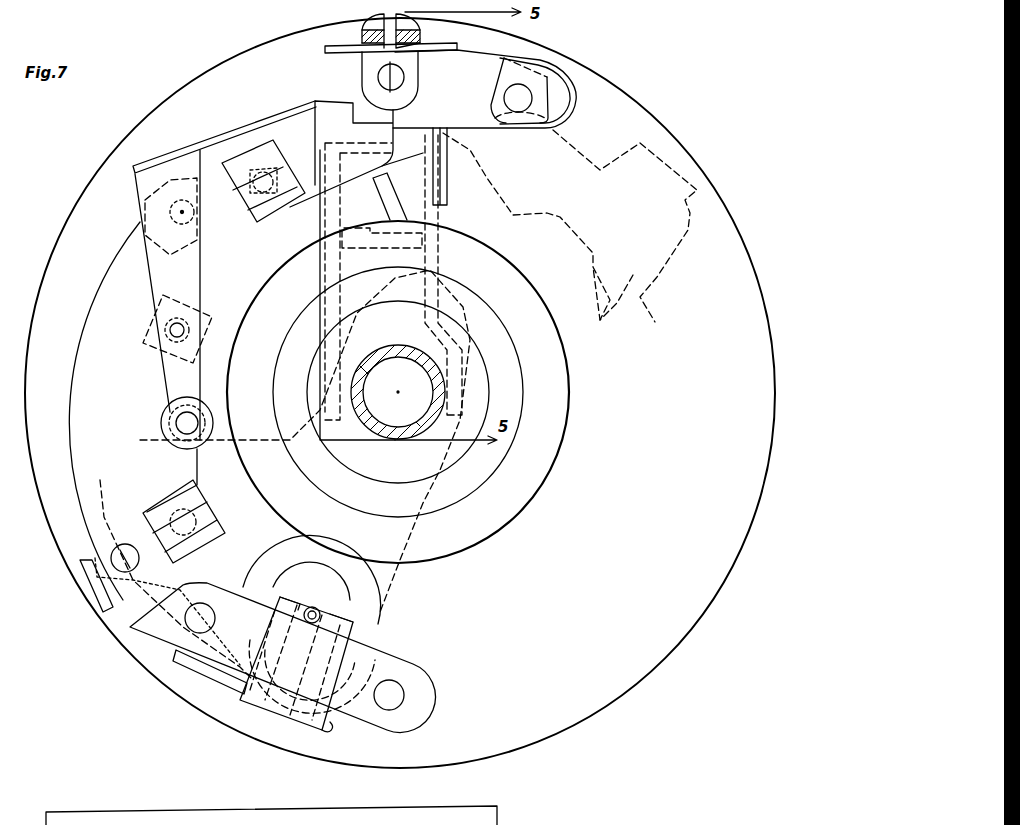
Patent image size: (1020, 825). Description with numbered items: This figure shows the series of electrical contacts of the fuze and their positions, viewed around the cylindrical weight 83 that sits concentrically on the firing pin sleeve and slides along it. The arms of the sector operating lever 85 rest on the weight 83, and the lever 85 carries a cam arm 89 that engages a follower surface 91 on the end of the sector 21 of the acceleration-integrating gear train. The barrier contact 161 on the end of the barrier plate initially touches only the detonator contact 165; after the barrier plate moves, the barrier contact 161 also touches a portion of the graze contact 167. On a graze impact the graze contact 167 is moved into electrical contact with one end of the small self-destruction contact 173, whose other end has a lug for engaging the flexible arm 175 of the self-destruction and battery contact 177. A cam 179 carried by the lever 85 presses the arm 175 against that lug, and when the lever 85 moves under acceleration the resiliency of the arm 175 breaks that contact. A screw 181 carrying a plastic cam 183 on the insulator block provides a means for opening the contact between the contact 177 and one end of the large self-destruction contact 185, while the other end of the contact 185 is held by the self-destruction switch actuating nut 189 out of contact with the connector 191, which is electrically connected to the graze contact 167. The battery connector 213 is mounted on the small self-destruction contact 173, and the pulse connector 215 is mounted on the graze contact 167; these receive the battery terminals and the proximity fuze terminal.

The sector 21 is at (625, 232).
The cylindrical weight 83 is at (495, 517).
The sector operating lever 85 is at (438, 217).
The cam arm 89 is at (398, 236).
The follower surface 91 is at (385, 189).
The barrier contact 161 is at (117, 628).
The detonator contact 165 is at (162, 647).
The graze contact 167 is at (87, 310).
The small self-destruction contact 173 is at (213, 220).
The flexible arm 175 is at (407, 127).
The self-destruction and battery contact 177 is at (478, 50).
The cam 179 is at (443, 165).
The screw 181 is at (366, 28).
The plastic cam 183 is at (330, 47).
The large self-destruction contact 185 is at (268, 117).
The self-destruction switch actuating nut 189 is at (200, 317).
The connector 191 is at (160, 424).
The battery connector 213 is at (257, 208).
The pulse connector 215 is at (207, 530).